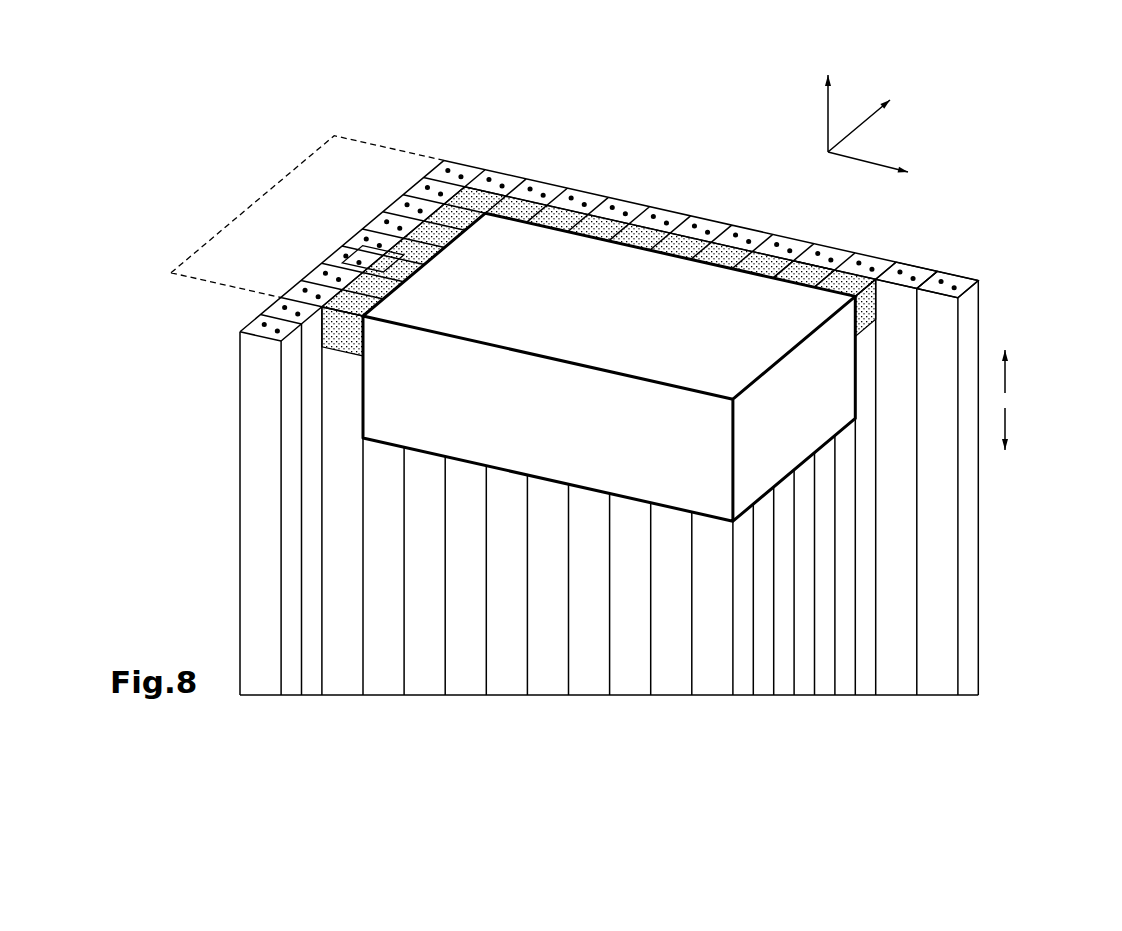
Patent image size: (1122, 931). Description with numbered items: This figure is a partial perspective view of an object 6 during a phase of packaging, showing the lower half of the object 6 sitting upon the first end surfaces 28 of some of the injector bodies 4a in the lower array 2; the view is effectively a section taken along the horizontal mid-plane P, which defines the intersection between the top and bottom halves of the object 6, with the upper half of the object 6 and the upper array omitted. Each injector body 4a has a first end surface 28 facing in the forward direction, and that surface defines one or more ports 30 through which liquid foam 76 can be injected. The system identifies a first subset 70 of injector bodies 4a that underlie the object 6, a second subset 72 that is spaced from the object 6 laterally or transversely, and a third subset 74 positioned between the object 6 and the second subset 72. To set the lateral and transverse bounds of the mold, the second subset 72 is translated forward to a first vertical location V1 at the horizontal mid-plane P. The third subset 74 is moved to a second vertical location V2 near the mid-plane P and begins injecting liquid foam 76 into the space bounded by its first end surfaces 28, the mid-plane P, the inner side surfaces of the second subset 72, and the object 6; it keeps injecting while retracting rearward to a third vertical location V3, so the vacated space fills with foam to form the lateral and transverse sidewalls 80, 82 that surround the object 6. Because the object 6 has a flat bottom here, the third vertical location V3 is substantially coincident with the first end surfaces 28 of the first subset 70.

The lower array 2 is at (662, 140).
The injector body 4a is at (392, 548).
The object 6 is at (511, 417).
The first end surface 28 is at (872, 268).
The port 30 is at (956, 281).
The first subset of injector bodies 70 is at (855, 697).
The second subset of injector bodies 72 is at (240, 697).
The third subset of injector bodies 74 is at (322, 697).
The liquid foam 76 is at (557, 215).
The lateral sidewall 80 is at (418, 243).
The transverse sidewall 82 is at (730, 248).
The horizontal mid-plane P is at (363, 137).
The first vertical location V1 is at (362, 316).
The second vertical location V2 is at (362, 355).
The third vertical location V3 is at (362, 437).